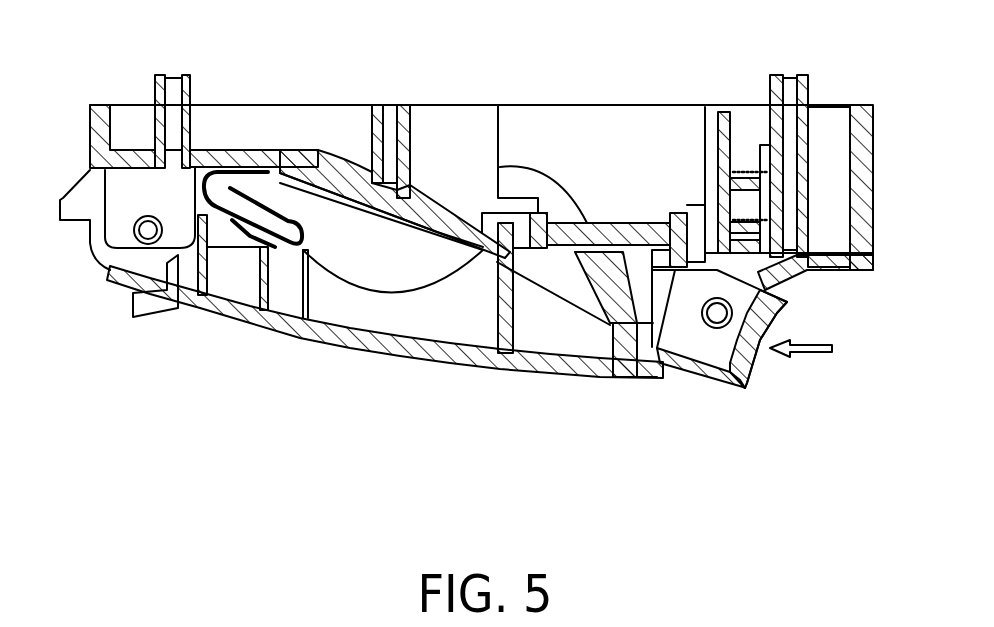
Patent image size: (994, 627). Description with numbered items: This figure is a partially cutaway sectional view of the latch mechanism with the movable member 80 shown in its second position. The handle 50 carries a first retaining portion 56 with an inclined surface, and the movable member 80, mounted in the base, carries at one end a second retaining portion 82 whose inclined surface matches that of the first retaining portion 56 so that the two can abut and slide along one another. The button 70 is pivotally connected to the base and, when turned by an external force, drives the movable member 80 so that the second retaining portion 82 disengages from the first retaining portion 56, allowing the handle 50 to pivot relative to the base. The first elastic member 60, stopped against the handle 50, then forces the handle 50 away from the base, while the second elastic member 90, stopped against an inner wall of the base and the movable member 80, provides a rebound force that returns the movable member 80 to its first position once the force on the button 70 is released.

The handle 50 is at (260, 327).
The first retaining portion 56 is at (505, 245).
The first elastic member 60 is at (290, 222).
The button 70 is at (742, 391).
The movable member 80 is at (630, 221).
The second retaining portion 82 is at (548, 260).
The second elastic member 90 is at (743, 173).